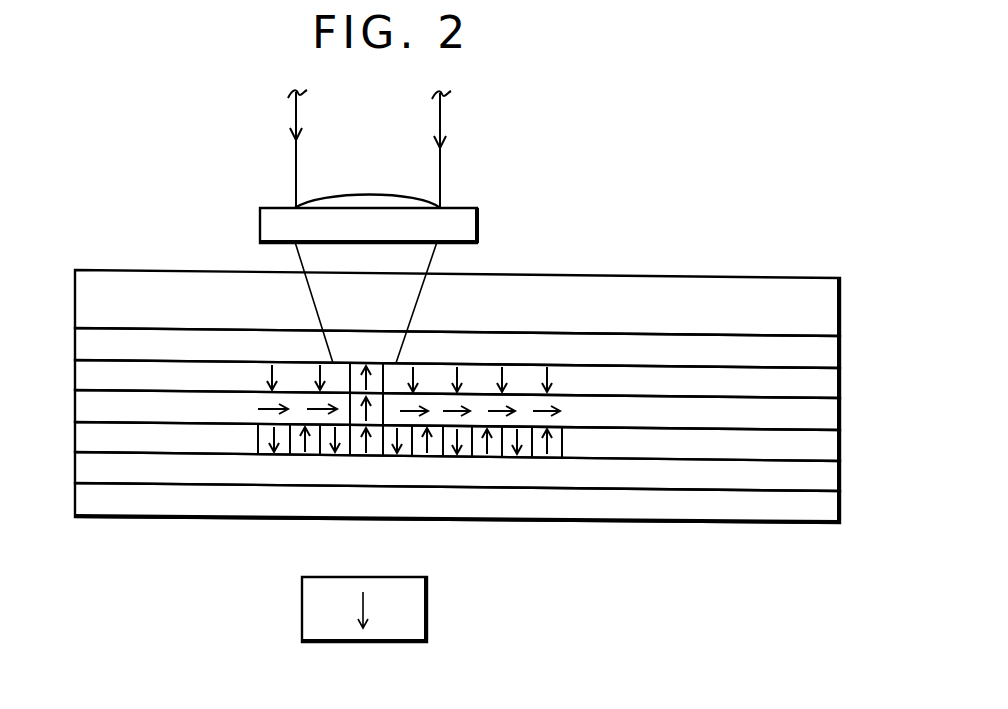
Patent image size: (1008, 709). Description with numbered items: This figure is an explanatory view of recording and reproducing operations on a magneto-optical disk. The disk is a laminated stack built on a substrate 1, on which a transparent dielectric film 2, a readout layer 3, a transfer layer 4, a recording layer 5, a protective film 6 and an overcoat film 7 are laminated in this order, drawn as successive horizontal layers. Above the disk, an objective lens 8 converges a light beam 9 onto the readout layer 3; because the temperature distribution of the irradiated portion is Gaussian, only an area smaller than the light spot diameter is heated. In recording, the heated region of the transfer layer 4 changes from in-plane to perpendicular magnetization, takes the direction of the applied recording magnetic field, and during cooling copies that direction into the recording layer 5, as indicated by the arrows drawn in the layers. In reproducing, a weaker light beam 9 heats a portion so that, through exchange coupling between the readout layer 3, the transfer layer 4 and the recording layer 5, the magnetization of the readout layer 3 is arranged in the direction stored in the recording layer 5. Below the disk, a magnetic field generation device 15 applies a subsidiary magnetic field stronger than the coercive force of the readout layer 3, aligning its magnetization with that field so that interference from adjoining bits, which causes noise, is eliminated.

The substrate 1 is at (840, 312).
The transparent dielectric film 2 is at (835, 355).
The readout layer 3 is at (835, 387).
The transfer layer 4 is at (830, 413).
The recording layer 5 is at (833, 444).
The protective film 6 is at (828, 477).
The overcoat film 7 is at (830, 512).
The objective lens 8 is at (481, 233).
The light beam 9 is at (440, 162).
The magnetic field generation device 15 is at (427, 630).